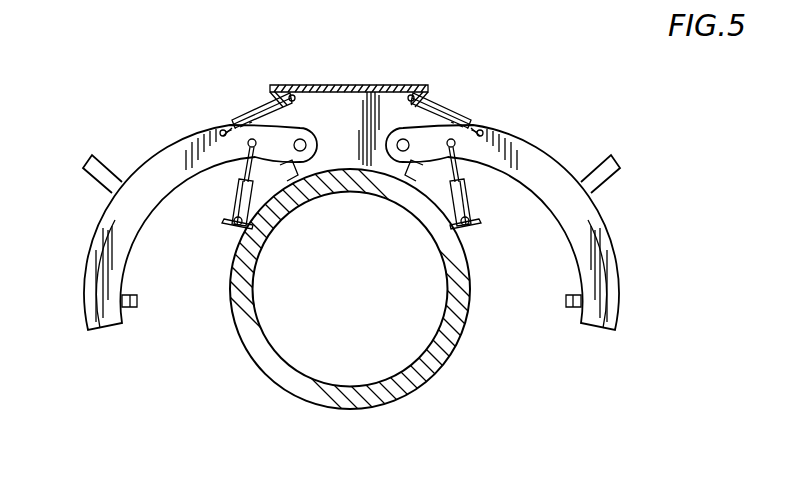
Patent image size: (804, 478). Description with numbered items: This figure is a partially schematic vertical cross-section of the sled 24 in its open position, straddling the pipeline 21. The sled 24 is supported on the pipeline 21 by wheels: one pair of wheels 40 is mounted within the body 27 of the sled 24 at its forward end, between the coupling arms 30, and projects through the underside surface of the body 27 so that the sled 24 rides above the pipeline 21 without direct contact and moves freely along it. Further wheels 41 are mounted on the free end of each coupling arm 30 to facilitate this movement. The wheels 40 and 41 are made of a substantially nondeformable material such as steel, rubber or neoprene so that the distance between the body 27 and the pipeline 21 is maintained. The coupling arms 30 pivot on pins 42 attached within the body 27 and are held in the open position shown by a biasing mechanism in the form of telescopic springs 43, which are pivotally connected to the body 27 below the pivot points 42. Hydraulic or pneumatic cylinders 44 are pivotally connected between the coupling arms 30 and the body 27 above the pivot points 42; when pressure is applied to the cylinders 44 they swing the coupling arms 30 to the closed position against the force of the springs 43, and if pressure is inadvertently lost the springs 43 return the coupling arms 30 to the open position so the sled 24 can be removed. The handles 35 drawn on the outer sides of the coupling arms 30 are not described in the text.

The pipeline 21 is at (415, 398).
The sled 24 is at (507, 47).
The body 27 is at (375, 84).
The coupling arms 30 is at (182, 140).
The handle 35 is at (84, 182).
The wheels 40 is at (297, 186).
The wheels 41 is at (138, 302).
The pins 42 is at (397, 143).
The telescopic springs 43 is at (240, 190).
The hydraulic or pneumatic cylinders 44 is at (252, 113).